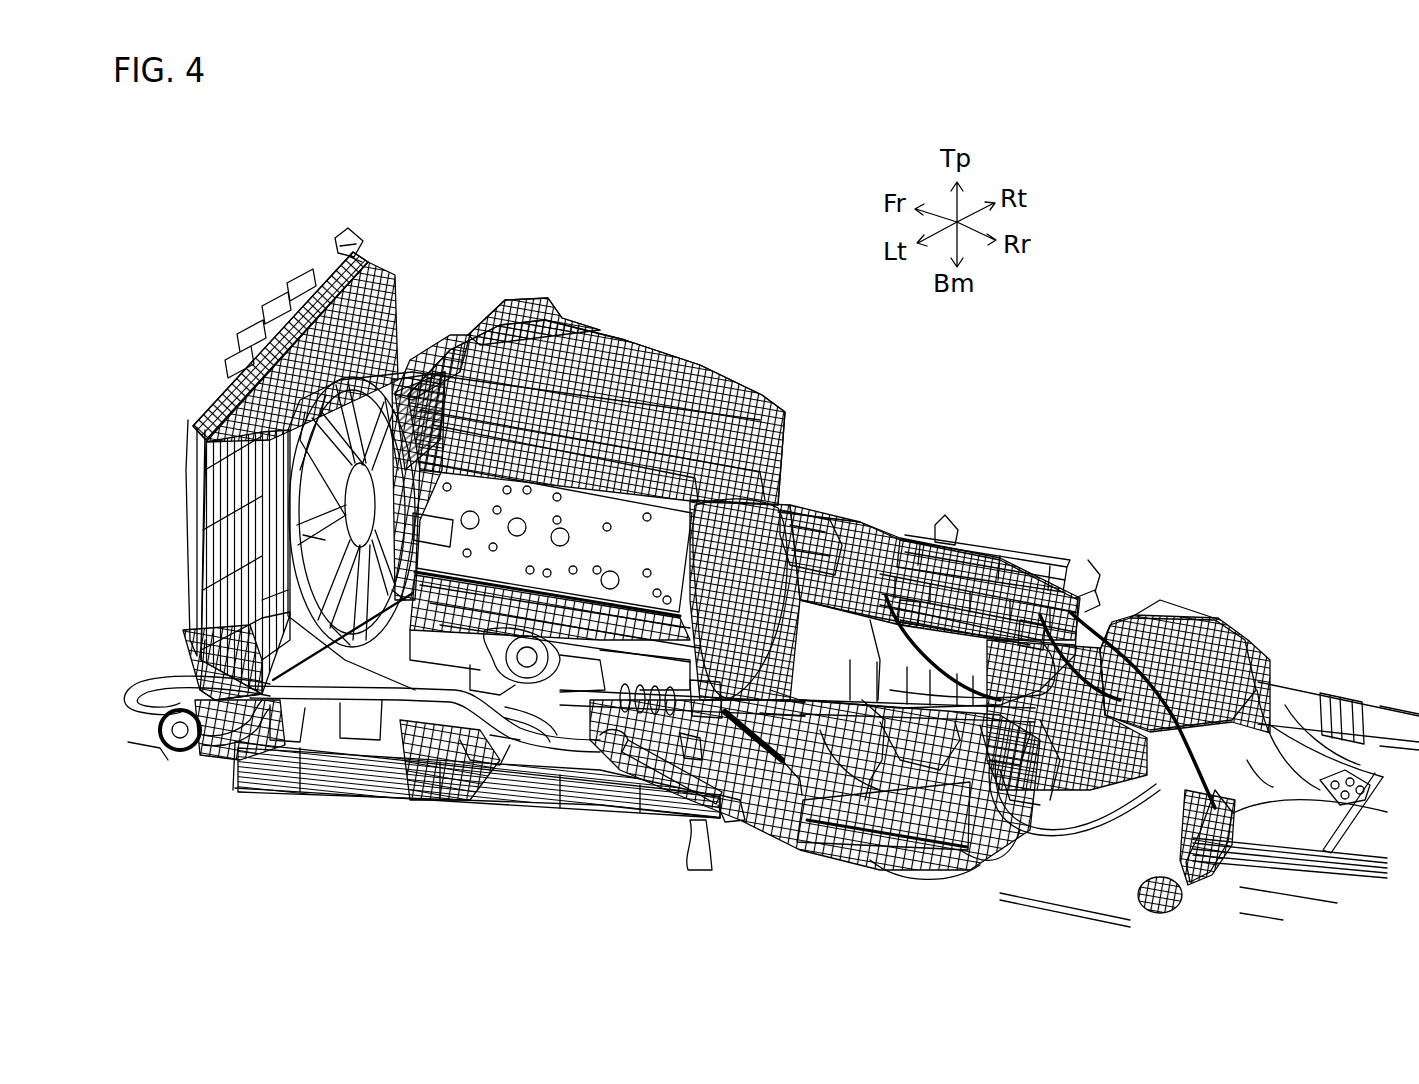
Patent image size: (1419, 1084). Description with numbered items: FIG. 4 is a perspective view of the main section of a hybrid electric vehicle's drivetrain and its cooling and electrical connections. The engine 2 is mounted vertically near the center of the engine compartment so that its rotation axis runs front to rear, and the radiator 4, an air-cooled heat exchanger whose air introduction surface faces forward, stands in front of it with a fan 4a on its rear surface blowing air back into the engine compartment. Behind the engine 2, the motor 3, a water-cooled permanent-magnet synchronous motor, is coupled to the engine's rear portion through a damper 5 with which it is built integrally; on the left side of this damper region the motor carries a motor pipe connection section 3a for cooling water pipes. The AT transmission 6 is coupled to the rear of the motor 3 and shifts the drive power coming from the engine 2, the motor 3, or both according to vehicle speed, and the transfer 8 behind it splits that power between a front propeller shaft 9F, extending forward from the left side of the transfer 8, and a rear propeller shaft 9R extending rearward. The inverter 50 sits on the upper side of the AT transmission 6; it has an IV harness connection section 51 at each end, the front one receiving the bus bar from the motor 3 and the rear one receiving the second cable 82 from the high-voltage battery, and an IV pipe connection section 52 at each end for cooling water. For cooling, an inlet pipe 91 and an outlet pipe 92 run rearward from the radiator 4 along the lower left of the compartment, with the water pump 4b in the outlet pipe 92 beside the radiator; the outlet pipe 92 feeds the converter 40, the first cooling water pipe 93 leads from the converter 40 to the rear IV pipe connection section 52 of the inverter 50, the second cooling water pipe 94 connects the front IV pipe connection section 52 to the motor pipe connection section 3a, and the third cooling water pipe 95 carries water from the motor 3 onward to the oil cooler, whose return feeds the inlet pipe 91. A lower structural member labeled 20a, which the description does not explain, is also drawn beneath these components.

The engine 2 is at (615, 372).
The motor 3 is at (830, 526).
The motor pipe connection section 3a is at (680, 735).
The radiator 4 is at (310, 266).
The fan 4a is at (400, 380).
The water pump 4b is at (171, 752).
The damper 5 is at (770, 496).
The AT transmission 6 is at (940, 650).
The transfer 8 is at (1185, 634).
The front propeller shaft 9F is at (788, 772).
The rear propeller shaft 9R is at (1296, 697).
The subframe 20a is at (354, 788).
The converter 40 is at (967, 845).
The inverter 50 is at (990, 562).
The IV harness connection section 51 is at (900, 572).
The IV pipe connection section 52 is at (1082, 600).
The second cable 82 is at (892, 592).
The inlet pipe 91 is at (505, 762).
The outlet pipe 92 is at (324, 702).
The first cooling water pipe 93 is at (1020, 828).
The second cooling water pipe 94 is at (790, 522).
The third cooling water pipe 95 is at (750, 813).